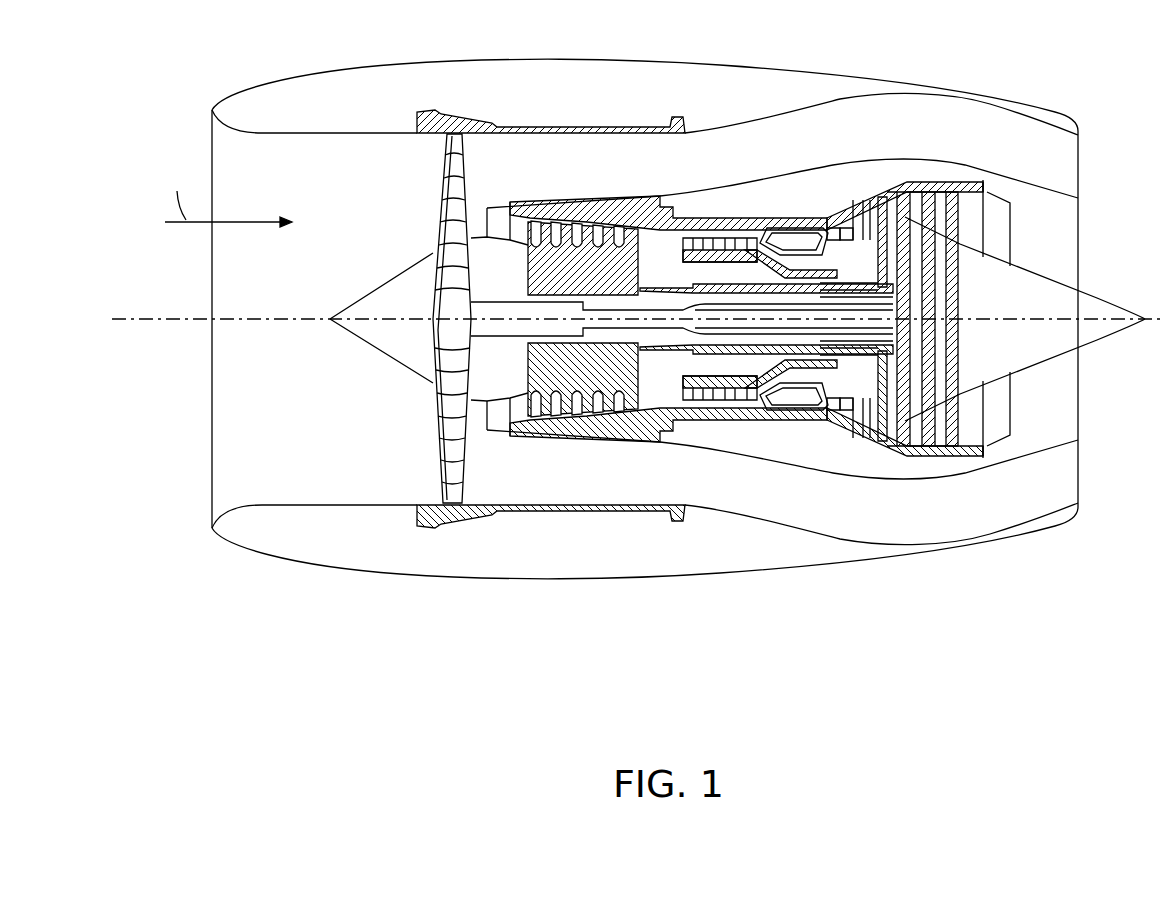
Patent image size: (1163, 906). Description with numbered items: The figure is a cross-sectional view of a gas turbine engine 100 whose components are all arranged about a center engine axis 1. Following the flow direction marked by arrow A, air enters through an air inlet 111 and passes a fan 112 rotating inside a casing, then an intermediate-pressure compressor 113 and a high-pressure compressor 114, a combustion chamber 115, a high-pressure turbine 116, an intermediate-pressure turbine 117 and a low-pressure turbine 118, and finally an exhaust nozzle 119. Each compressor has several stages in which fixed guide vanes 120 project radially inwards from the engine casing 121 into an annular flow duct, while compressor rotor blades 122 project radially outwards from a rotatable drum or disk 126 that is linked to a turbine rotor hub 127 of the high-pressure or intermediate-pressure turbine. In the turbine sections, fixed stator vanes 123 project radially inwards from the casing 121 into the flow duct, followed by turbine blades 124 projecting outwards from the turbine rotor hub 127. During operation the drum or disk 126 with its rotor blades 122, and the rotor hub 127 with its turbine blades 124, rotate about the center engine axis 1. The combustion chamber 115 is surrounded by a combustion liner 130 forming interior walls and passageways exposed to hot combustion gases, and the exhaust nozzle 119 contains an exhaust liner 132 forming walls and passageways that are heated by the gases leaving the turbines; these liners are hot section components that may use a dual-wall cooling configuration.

The gas turbine engine 100 is at (200, 82).
The air inlet 111 is at (340, 150).
The center engine axis 1 is at (176, 328).
The fan 112 is at (468, 138).
The intermediate-pressure compressor 113 is at (602, 222).
The high-pressure compressor 114 is at (730, 238).
The combustion chamber 115 is at (810, 236).
The high-pressure turbine 116 is at (858, 228).
The intermediate-pressure turbine 117 is at (890, 200).
The low-pressure turbine 118 is at (960, 185).
The exhaust nozzle 119 is at (1005, 233).
The guide vanes 120 is at (545, 432).
The engine casing 121 is at (575, 445).
The compressor rotor blades 122 is at (603, 445).
The fixed stator vanes 123 is at (885, 452).
The turbine blades 124 is at (935, 440).
The rotatable drum or disk 126 is at (795, 352).
The turbine rotor hub 127 is at (1095, 298).
The combustion liner 130 is at (818, 226).
The exhaust liner 132 is at (1000, 182).